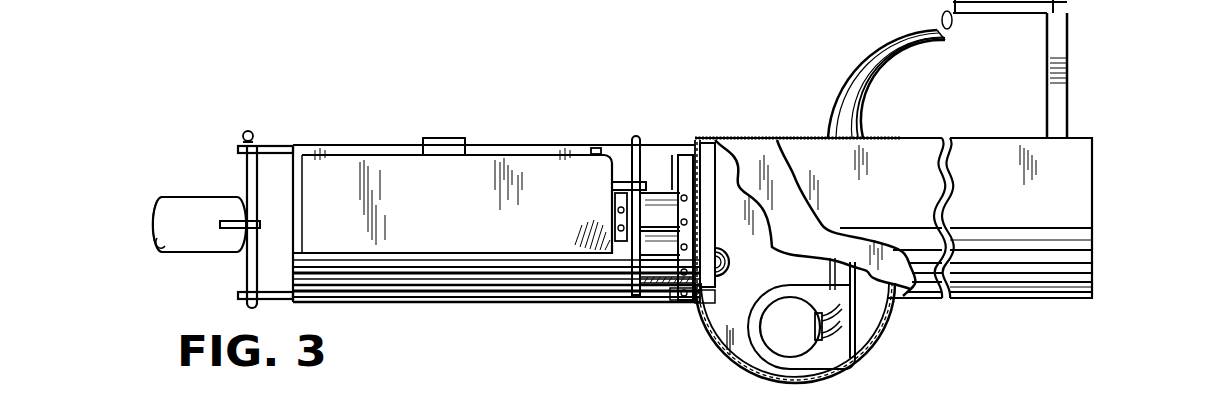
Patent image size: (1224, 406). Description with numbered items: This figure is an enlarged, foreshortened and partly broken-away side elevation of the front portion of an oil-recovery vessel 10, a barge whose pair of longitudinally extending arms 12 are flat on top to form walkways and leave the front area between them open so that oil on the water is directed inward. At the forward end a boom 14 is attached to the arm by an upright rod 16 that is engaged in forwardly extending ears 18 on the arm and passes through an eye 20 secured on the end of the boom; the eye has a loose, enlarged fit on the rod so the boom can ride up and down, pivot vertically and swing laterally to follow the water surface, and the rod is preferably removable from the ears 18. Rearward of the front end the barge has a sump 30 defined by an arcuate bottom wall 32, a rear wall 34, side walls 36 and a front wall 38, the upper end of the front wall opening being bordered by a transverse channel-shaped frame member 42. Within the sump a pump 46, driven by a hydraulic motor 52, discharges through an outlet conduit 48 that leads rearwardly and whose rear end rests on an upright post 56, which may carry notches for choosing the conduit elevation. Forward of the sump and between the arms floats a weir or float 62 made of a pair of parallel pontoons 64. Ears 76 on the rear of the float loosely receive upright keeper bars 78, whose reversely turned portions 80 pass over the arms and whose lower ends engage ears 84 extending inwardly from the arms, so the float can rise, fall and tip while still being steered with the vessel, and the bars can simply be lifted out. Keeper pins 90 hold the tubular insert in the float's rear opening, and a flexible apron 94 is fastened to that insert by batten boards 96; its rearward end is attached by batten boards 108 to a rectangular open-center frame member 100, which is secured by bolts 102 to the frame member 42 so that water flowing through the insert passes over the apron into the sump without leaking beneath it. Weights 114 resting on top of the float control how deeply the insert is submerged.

The vessel 10 is at (539, 150).
The arms 12 is at (438, 289).
The booms 14 is at (191, 205).
The upright rods 16 is at (248, 266).
The ears 18 is at (279, 148).
The eyes 20 is at (255, 224).
The sump 30 is at (706, 325).
The arcuate bottom wall 32 is at (741, 365).
The rear wall 34 is at (888, 296).
The side walls 36 is at (725, 331).
The front wall 38 is at (690, 296).
The transverse channel-shaped frame member 42 is at (703, 141).
The pump 46 is at (758, 343).
The outlet conduit 48 is at (851, 272).
The hydraulic motor 52 is at (803, 340).
The upright post 56 is at (1053, 51).
The float 62 is at (394, 165).
The pontoons 64 is at (481, 172).
The ears 76 is at (641, 186).
The keeper bars 78 is at (630, 151).
The reversely turned portions 80 is at (636, 137).
The ears 84 is at (634, 280).
The keeper pins 90 is at (596, 149).
The flexible apron 94 is at (723, 253).
The batten boards 96 is at (607, 252).
The rectangular open center frame member 100 is at (684, 158).
The bolts 102 is at (672, 155).
The batten boards 108 is at (677, 294).
The weights 114 is at (433, 141).